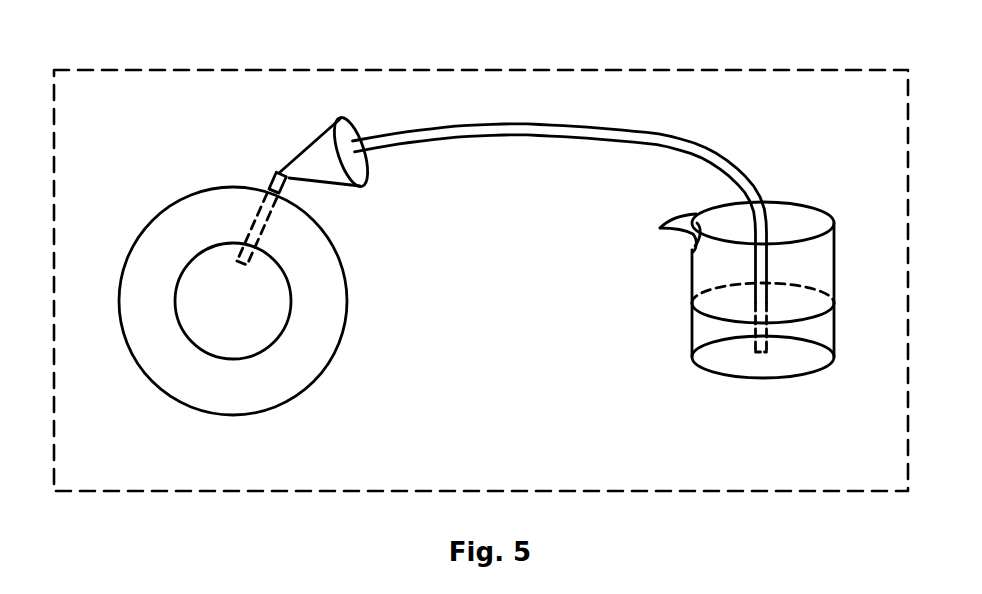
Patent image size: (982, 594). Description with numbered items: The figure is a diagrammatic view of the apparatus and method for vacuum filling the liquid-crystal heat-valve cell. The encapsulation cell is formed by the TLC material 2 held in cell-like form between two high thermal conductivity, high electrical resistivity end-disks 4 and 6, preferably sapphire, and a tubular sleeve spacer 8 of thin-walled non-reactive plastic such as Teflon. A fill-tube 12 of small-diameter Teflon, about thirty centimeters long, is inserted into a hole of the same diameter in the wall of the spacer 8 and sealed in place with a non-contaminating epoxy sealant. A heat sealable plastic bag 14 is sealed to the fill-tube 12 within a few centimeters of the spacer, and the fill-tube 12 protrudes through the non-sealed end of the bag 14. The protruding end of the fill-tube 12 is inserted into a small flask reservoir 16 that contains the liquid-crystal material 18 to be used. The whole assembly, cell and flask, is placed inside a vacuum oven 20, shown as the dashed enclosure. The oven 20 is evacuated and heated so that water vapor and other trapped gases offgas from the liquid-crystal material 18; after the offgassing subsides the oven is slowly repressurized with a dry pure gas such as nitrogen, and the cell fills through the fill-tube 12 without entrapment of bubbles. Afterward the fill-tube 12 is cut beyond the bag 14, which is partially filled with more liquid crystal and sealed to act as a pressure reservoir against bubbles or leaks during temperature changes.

The TLC material 2 is at (231, 312).
The end-disk 4 is at (264, 301).
The end-disk 6 is at (343, 288).
The tubular sleeve spacer 8 is at (187, 268).
The fill-tube 12 is at (276, 182).
The heat sealable plastic bag 14 is at (367, 162).
The flask reservoir 16 is at (693, 301).
The liquid-crystal material 18 is at (720, 329).
The vacuum oven 20 is at (818, 70).